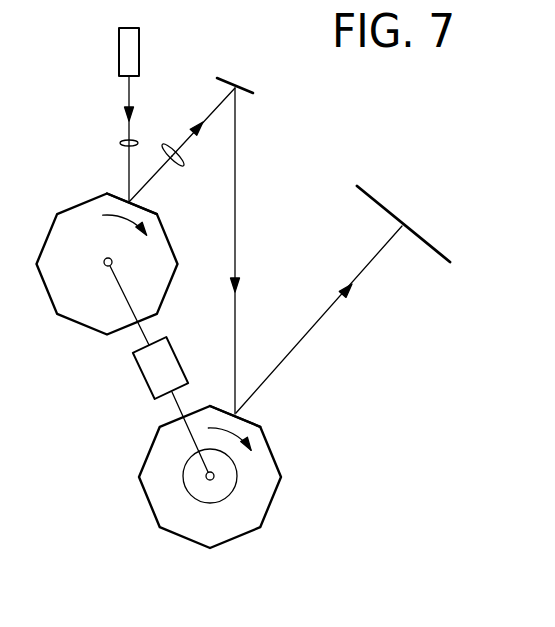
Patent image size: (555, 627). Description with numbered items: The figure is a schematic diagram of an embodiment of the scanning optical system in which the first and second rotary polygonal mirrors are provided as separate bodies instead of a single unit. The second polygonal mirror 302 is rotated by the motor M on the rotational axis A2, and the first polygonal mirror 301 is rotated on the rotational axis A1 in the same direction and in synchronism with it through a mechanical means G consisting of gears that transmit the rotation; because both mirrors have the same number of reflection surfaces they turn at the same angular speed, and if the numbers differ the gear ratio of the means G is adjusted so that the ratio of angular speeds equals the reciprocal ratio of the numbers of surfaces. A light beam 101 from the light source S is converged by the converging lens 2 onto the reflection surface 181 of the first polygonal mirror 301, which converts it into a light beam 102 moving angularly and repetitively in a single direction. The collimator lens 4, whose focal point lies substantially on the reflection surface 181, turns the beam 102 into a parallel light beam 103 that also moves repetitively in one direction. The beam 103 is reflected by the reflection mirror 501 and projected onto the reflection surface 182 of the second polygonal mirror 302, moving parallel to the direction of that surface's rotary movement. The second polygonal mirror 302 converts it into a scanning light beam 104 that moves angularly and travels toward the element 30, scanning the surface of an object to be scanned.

The light source S is at (118, 52).
The light beam 101 is at (127, 88).
The converging lens 2 is at (137, 142).
The reflection surface 181 is at (115, 195).
The light beam 102 is at (152, 180).
The parallel light beam 103 is at (212, 107).
The collimator lens 4 is at (185, 162).
The reflection mirror 501 is at (250, 85).
The first rotary polygonal mirror 301 is at (77, 312).
The rotational axis A1 is at (104, 262).
The mechanical means G is at (137, 376).
The mirror / target surface 30 is at (385, 207).
The scanning light beam 104 is at (332, 305).
The reflection surface 182 is at (243, 412).
The second rotary polygonal mirror 302 is at (245, 521).
The motor M is at (218, 504).
The rotational axis A2 is at (208, 480).